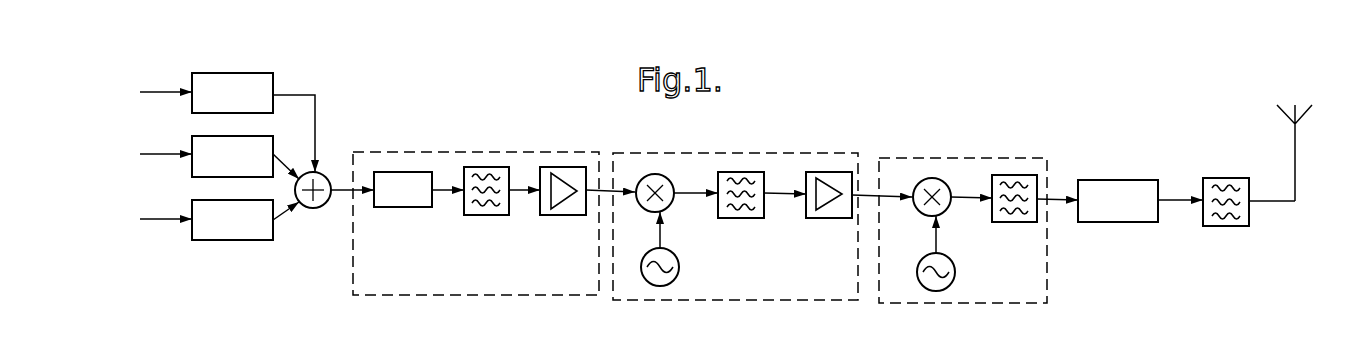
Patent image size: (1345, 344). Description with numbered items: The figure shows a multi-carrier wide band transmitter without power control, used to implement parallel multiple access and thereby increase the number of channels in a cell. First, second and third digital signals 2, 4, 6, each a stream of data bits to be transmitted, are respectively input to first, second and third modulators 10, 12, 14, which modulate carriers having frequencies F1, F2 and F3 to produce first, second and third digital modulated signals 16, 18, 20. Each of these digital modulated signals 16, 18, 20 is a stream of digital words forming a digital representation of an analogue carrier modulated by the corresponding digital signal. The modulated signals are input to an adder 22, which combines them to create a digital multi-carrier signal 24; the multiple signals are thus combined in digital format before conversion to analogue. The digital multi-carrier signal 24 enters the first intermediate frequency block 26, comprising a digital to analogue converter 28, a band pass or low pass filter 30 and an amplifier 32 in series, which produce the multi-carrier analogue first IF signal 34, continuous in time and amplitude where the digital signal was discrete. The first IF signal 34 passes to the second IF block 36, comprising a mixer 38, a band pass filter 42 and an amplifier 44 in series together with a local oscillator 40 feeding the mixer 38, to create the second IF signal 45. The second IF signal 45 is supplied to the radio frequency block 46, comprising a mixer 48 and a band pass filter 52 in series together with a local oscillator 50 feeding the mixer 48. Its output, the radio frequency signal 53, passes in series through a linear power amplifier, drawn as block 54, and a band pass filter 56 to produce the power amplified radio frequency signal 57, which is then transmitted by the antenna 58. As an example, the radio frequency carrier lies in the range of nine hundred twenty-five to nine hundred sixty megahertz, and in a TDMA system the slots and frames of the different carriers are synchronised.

The first digital signal 2 is at (162, 93).
The second digital signal 4 is at (162, 155).
The third digital signal 6 is at (162, 220).
The first modulator 10 is at (221, 106).
The second modulator 12 is at (221, 169).
The third modulator 14 is at (221, 233).
The first digital modulated signal 16 is at (295, 95).
The second digital modulated signal 18 is at (283, 158).
The third digital modulated signal 20 is at (282, 216).
The adder 22 is at (328, 176).
The digital multi-carrier signal 24 is at (342, 194).
The first intermediate frequency (IF) block 26 is at (472, 150).
The digital to analogue converter 28 is at (408, 208).
The band pass or low pass filter 30 is at (489, 216).
The amplifier 32 is at (563, 216).
The first IF signal 34 is at (621, 188).
The second IF block 36 is at (700, 152).
The mixer 38 is at (672, 206).
The local oscillator 40 is at (680, 268).
The band pass filter 42 is at (742, 219).
The amplifier 44 is at (832, 219).
The second intermediate frequency (IF) signal 45 is at (870, 198).
The radio frequency block 46 is at (933, 157).
The mixer 48 is at (949, 210).
The local oscillator 50 is at (956, 274).
The band pass filter 52 is at (1030, 222).
The radio frequency signal 53 is at (1055, 201).
The power amplifier block 54 is at (1107, 212).
The band pass filter 56 is at (1229, 226).
The power amplified radio frequency signal 57 is at (1275, 201).
The antenna 58 is at (1280, 110).